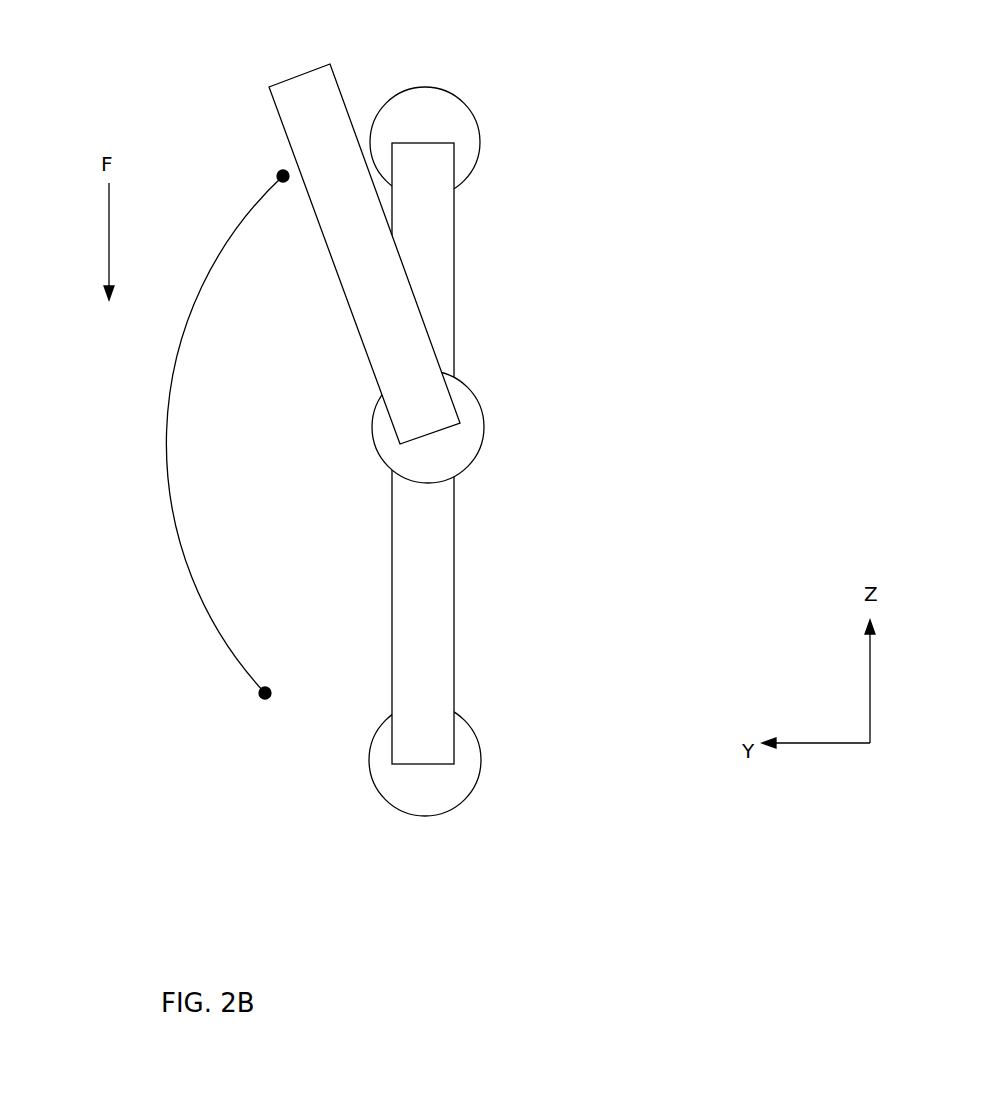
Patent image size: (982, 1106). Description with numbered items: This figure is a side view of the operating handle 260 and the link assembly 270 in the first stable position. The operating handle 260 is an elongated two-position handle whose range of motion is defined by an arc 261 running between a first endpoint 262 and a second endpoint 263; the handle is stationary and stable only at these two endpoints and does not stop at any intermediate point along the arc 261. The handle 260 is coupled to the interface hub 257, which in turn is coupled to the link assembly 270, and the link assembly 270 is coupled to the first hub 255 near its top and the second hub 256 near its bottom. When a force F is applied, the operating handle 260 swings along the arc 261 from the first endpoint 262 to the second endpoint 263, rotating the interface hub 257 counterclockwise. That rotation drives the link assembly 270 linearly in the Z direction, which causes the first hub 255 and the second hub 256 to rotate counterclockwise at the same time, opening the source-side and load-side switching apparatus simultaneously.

The first hub 255 is at (435, 113).
The second hub 256 is at (397, 785).
The interface hub 257 is at (468, 450).
The operating handle 260 is at (323, 100).
The arc 261 is at (128, 440).
The first endpoint 262 is at (283, 195).
The second endpoint 263 is at (274, 711).
The link assembly 270 is at (455, 292).